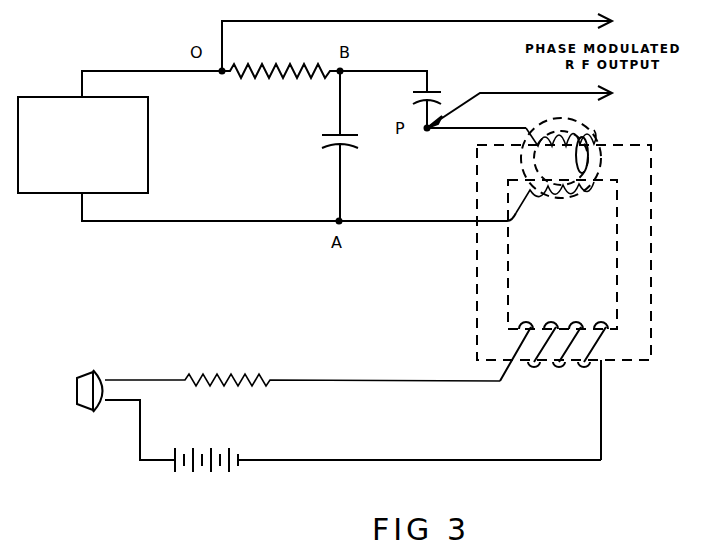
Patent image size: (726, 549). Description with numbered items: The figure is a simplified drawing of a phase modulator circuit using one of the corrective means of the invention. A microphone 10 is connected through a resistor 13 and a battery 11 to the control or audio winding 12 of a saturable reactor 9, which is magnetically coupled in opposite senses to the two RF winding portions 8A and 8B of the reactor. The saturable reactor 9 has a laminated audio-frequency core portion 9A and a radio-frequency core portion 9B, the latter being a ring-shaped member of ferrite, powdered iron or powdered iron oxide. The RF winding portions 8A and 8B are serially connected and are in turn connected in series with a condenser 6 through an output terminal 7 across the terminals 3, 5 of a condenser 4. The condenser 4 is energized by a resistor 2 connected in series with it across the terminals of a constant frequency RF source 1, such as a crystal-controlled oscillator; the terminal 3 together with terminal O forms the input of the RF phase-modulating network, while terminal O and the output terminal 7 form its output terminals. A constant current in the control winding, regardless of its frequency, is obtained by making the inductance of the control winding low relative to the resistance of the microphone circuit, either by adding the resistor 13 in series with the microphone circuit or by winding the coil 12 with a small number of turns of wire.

The constant frequency RF source 1 is at (90, 154).
The resistor 2 is at (284, 77).
The terminal 3 is at (414, 205).
The condenser 4 is at (330, 134).
The terminal 5 is at (344, 74).
The condenser 6 is at (432, 98).
The output terminal 7 is at (430, 132).
The RF winding portion 8A is at (538, 128).
The RF winding portion 8B is at (566, 192).
The saturable reactor 9 is at (568, 168).
The laminated audio-frequency core portion 9A is at (651, 214).
The radio-frequency core portion 9B is at (597, 138).
The microphone 10 is at (109, 370).
The battery 11 is at (212, 472).
The control or audio winding 12 is at (562, 362).
The resistor 13 is at (242, 372).